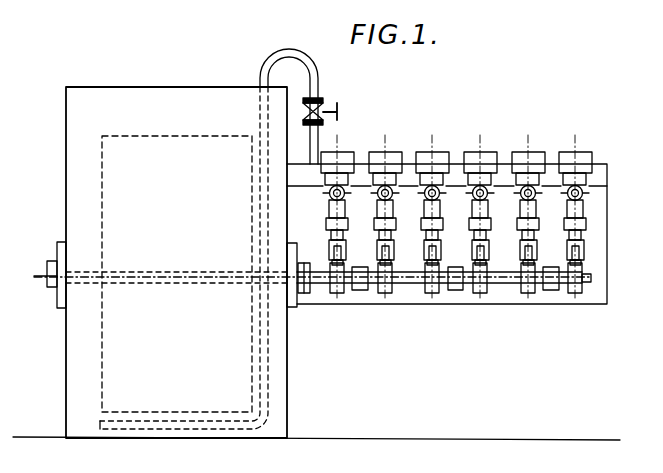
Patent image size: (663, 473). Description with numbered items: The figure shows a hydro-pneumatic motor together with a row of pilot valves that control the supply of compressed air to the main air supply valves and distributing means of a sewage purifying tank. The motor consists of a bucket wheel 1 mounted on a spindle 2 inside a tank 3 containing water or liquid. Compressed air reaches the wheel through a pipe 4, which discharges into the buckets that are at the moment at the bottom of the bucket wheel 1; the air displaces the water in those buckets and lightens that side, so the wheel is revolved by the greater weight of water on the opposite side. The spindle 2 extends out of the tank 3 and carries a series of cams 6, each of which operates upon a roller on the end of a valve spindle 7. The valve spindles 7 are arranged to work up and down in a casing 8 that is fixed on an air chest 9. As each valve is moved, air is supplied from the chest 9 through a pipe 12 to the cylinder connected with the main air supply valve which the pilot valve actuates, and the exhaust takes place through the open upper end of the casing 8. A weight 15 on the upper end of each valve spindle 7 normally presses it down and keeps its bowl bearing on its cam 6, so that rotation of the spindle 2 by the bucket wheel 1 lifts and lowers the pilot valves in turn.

The bucket wheel 1 is at (134, 139).
The spindle 2 is at (139, 272).
The tank 3 is at (213, 95).
The pipe 4 is at (310, 63).
The cams 6 is at (383, 293).
The valve spindles 7 is at (426, 235).
The casing 8 is at (345, 206).
The air chest 9 is at (297, 207).
The pipe 12 is at (391, 197).
The weight 15 is at (340, 153).